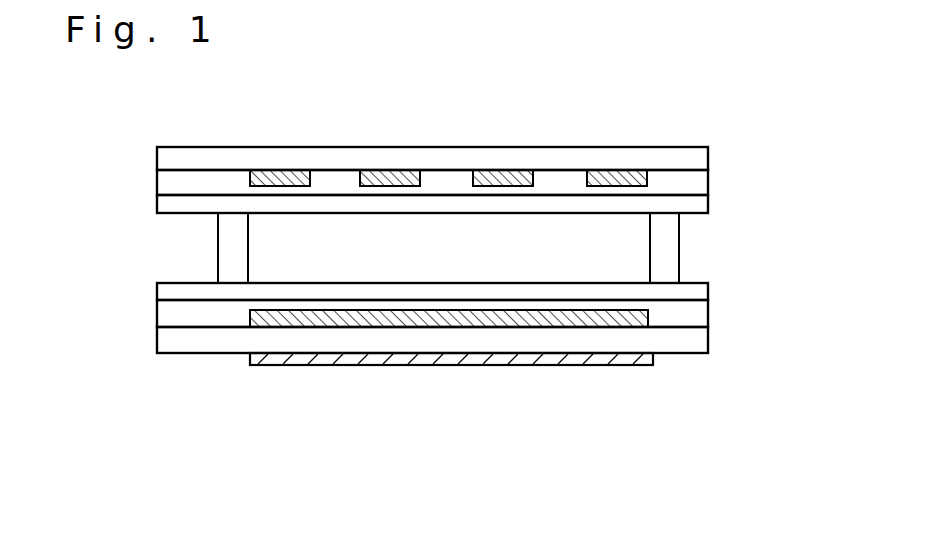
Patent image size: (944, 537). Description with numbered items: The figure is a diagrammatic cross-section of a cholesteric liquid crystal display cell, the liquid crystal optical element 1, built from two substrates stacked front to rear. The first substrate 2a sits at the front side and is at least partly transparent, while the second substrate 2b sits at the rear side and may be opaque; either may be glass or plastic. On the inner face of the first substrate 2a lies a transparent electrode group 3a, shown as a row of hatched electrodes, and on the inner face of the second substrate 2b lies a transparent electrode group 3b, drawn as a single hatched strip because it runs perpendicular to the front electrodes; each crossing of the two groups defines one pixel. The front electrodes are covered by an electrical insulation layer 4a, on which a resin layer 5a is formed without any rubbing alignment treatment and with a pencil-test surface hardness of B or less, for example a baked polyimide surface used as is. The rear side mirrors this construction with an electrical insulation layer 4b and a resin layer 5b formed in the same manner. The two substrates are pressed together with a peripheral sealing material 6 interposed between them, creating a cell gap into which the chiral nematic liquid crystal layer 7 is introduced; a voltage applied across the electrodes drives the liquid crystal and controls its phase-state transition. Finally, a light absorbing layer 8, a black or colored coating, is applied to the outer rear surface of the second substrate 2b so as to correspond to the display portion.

The liquid crystal optical element 1 is at (783, 418).
The first substrate 2a is at (452, 146).
The second substrate 2b is at (698, 340).
The transparent electrode group 3a is at (288, 188).
The transparent electrode group 3b is at (250, 311).
The electrical insulation layer 4a is at (697, 188).
The electrical insulation layer 4b is at (698, 313).
The resin layer 5a is at (700, 205).
The resin layer 5b is at (700, 292).
The peripheral sealing material 6 is at (234, 257).
The chiral nematic liquid crystal layer 7 is at (258, 228).
The light absorbing layer 8 is at (655, 360).